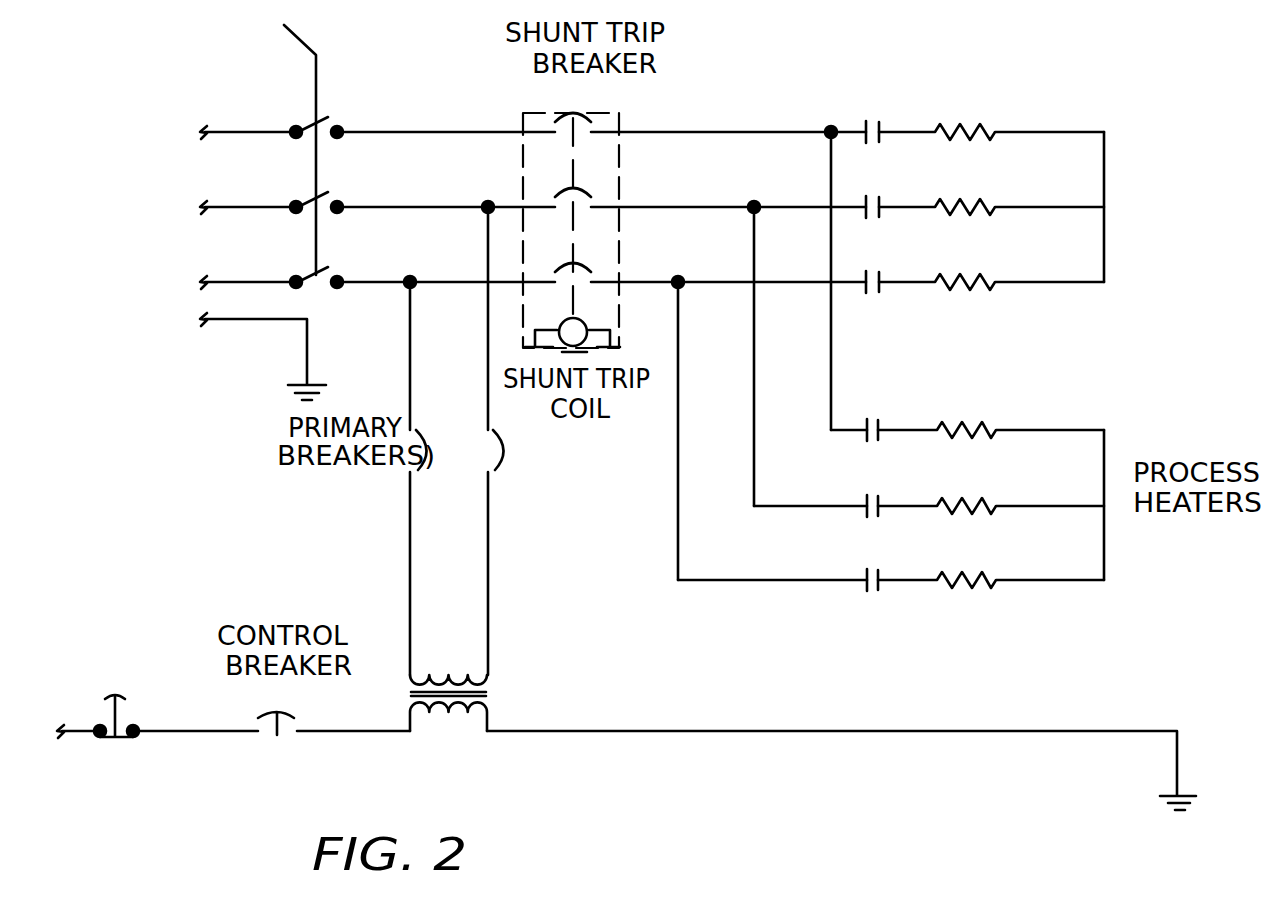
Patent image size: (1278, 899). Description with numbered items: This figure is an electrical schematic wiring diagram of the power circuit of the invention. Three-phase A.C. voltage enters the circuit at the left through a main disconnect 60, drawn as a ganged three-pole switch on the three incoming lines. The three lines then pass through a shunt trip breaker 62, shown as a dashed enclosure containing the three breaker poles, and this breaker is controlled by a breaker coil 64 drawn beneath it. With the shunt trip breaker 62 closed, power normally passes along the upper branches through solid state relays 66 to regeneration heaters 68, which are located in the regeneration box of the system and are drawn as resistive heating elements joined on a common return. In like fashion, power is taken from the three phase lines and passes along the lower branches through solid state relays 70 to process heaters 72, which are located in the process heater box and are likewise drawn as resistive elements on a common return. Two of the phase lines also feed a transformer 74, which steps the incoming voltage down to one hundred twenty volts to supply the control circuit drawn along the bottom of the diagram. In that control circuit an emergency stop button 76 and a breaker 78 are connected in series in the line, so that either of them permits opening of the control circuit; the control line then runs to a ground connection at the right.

The main disconnect 60 is at (318, 65).
The shunt trip breaker 62 is at (540, 112).
The breaker coil 64 is at (586, 326).
The solid state relays 66 is at (878, 118).
The regeneration heaters 68 is at (962, 122).
The solid state relays 70 is at (862, 435).
The process heaters 72 is at (968, 422).
The transformer 74 is at (487, 690).
The emergency stop button 76 is at (121, 740).
The breaker 78 is at (277, 735).